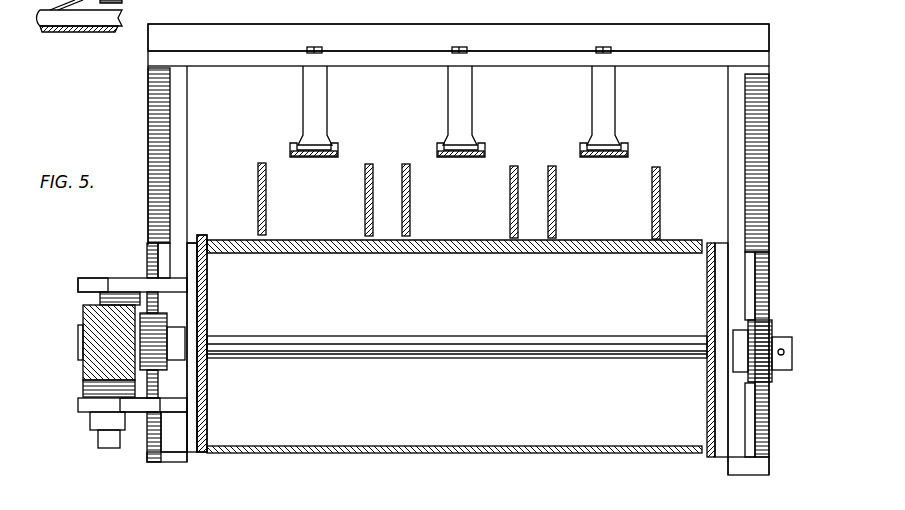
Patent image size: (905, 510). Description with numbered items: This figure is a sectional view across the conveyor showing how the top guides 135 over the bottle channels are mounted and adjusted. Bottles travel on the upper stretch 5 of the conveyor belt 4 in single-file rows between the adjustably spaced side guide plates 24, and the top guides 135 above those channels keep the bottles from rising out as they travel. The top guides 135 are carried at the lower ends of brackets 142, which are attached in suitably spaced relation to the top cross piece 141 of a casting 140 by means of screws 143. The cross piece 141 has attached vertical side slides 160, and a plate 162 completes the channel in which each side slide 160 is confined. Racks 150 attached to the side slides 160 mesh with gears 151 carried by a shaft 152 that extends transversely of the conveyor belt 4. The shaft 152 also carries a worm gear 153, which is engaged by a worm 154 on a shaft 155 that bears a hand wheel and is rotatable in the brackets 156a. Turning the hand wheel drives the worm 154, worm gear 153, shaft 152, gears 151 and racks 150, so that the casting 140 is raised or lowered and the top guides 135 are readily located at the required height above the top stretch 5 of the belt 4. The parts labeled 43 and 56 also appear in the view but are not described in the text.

The conveyor belt 4 is at (354, 446).
The upper stretch 5 is at (392, 252).
The side guide plates 24 is at (364, 217).
The guide member 43 is at (80, 32).
The end plate 56 is at (207, 280).
The top guides 135 is at (320, 158).
The casting 140 is at (768, 66).
The top cross piece 141 is at (663, 62).
The brackets 142 is at (320, 118).
The screws 143 is at (321, 46).
The racks 150 is at (148, 212).
The gears 151 is at (168, 330).
The shaft 152 is at (370, 337).
The worm gear 153 is at (112, 296).
The worm 154 is at (84, 318).
The shaft 155 is at (92, 437).
The brackets 156a is at (80, 286).
The vertical side slides 160 is at (187, 150).
The plate 162 is at (195, 238).